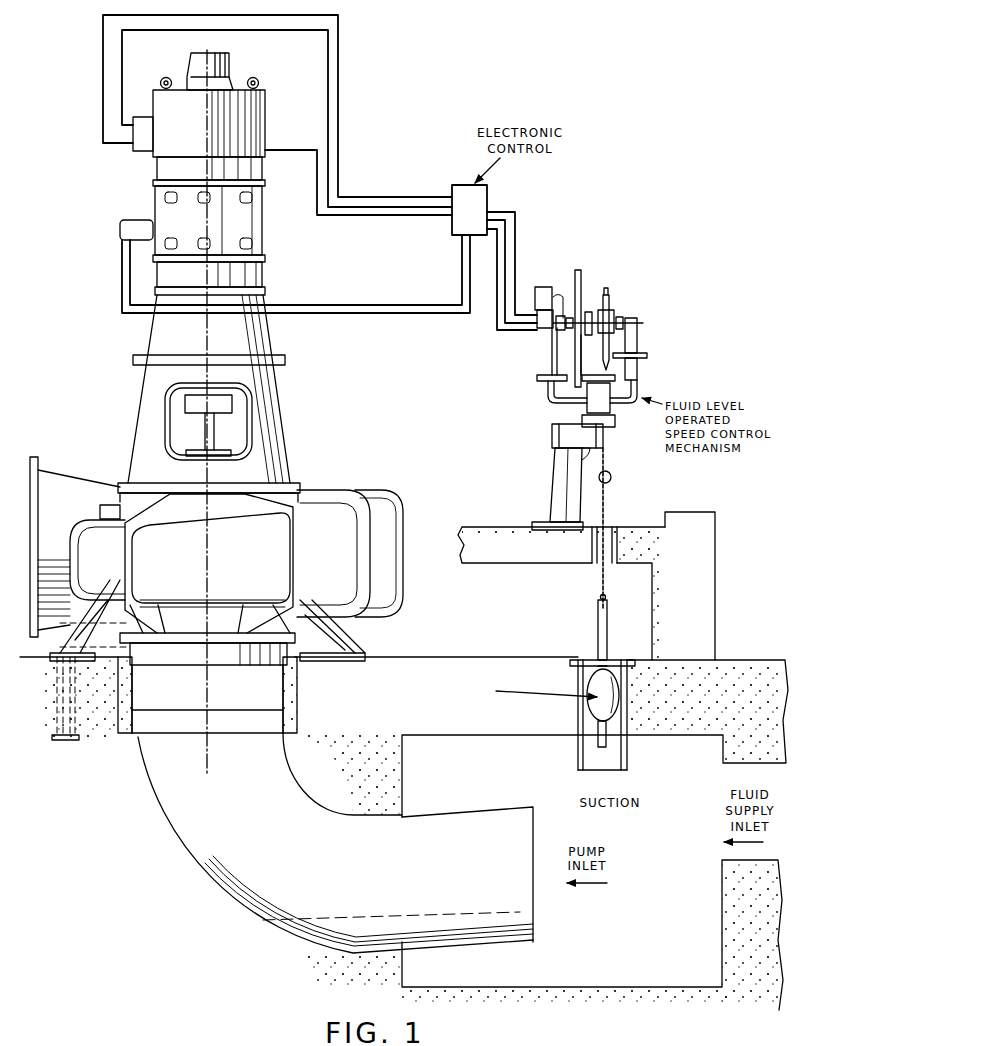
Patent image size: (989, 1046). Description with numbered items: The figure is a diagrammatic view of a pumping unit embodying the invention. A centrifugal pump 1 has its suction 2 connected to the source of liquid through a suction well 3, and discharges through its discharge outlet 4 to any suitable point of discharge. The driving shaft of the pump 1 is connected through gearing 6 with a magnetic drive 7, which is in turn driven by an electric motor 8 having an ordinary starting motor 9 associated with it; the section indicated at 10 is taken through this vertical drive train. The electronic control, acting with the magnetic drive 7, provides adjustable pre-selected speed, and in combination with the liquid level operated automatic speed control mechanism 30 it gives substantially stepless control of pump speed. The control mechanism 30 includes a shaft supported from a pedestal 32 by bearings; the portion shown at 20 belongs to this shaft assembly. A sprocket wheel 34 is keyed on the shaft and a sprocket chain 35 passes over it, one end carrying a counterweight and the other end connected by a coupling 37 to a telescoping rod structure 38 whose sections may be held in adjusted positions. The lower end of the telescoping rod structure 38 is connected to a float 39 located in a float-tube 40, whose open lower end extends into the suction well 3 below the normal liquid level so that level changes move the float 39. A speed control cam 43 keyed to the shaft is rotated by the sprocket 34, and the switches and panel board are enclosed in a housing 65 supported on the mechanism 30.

The pump 1 is at (322, 520).
The suction 2 is at (215, 700).
The suction well 3 is at (520, 877).
The discharge outlet 4 is at (62, 482).
The gearing 6 is at (262, 345).
The magnetic drive 7 is at (265, 230).
The electric motor 8 is at (262, 116).
The starting motor 9 is at (226, 62).
The section line 10 is at (207, 50).
The speed control mechanism shaft assembly 20 is at (540, 328).
The liquid level operated automatic speed control mechanism 30 is at (545, 398).
The pedestal 32 is at (553, 486).
The sprocket wheel 34 is at (612, 297).
The sprocket chain 35 is at (600, 577).
The coupling 37 is at (600, 597).
The telescoping rod structure 38 is at (597, 638).
The float 39 is at (590, 710).
The float-tube 40 is at (617, 754).
The speed control cam 43 is at (581, 281).
The housing 65 is at (543, 287).